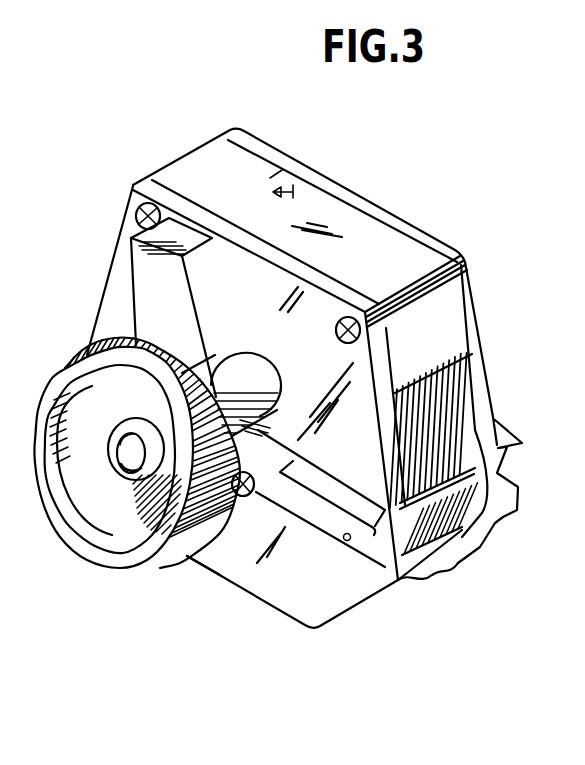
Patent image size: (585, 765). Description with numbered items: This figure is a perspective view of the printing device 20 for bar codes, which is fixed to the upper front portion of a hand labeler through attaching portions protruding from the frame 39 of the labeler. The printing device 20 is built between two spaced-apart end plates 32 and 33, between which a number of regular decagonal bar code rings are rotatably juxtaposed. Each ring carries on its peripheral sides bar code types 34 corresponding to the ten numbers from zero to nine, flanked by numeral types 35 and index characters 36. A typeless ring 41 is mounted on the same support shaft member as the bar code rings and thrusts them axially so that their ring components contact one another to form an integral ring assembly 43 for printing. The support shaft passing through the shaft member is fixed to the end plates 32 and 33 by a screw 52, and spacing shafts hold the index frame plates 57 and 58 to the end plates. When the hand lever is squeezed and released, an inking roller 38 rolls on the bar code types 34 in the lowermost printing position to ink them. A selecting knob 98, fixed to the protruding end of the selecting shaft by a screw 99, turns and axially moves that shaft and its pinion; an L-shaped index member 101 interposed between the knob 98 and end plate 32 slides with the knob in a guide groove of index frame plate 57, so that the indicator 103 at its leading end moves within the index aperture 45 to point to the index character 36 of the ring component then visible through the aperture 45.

The printing device 20 is at (376, 187).
The end plate 32 is at (322, 614).
The end plate 33 is at (487, 393).
The bar code types 34 is at (467, 537).
The numeral types 35 is at (398, 582).
The index characters 36 is at (495, 512).
The inking roller 38 is at (320, 500).
The frame 39 is at (493, 363).
The typeless ring 41 is at (518, 487).
The integral ring assembly 43 is at (430, 577).
The index aperture 45 is at (282, 170).
The screw 52 is at (245, 497).
The index frame plate 57 is at (195, 160).
The index frame plate 58 is at (421, 255).
The selecting knob 98 is at (77, 352).
The screw 99 is at (130, 480).
The L-shaped index member 101 is at (132, 272).
The indicator 103 is at (288, 198).